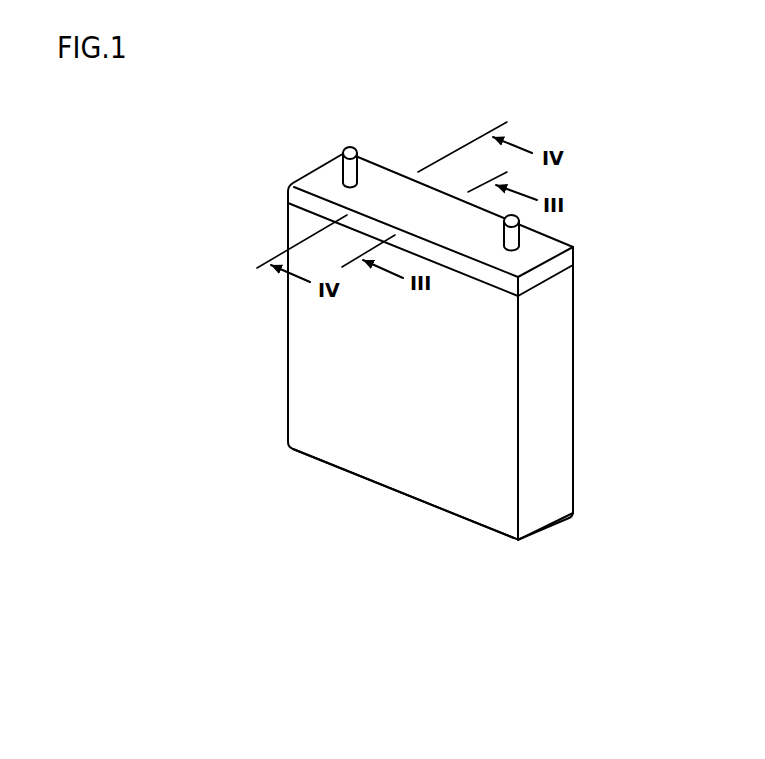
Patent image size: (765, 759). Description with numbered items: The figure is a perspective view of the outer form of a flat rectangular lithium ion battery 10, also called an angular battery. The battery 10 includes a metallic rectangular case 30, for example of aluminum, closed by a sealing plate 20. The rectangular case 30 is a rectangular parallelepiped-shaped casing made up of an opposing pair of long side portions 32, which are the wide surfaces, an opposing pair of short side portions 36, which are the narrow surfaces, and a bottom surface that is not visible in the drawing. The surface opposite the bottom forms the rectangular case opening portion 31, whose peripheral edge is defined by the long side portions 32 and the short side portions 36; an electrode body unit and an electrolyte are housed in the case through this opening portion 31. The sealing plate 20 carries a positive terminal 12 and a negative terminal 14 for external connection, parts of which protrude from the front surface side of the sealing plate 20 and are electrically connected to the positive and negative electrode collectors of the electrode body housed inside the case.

The flat rectangular battery 10 is at (489, 339).
The positive terminal 12 is at (350, 147).
The negative terminal 14 is at (519, 243).
The sealing plate 20 is at (321, 176).
The rectangular case 30 is at (401, 463).
The case opening portion 31 is at (582, 263).
The long side portions 32 is at (475, 489).
The short side portions 36 is at (555, 487).